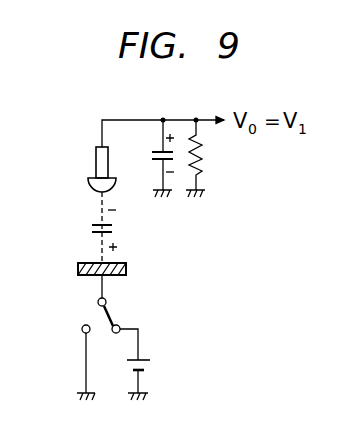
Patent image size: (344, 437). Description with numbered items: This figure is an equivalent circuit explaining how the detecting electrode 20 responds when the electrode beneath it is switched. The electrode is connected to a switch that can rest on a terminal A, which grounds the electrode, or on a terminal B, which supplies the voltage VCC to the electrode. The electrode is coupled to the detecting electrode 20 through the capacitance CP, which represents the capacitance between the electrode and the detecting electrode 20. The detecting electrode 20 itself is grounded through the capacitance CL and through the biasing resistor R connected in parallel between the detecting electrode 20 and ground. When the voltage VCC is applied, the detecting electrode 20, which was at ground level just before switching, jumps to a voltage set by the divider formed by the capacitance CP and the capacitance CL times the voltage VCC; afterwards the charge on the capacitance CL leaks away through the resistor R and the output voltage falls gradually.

The detecting electrode 20 is at (96, 166).
The capacitance between the electrode and the detecting electrode CP is at (85, 230).
The capacitance CL is at (147, 158).
The biasing resistor R is at (203, 158).
The terminal A is at (79, 362).
The terminal B is at (125, 342).
The voltage VCC is at (159, 376).